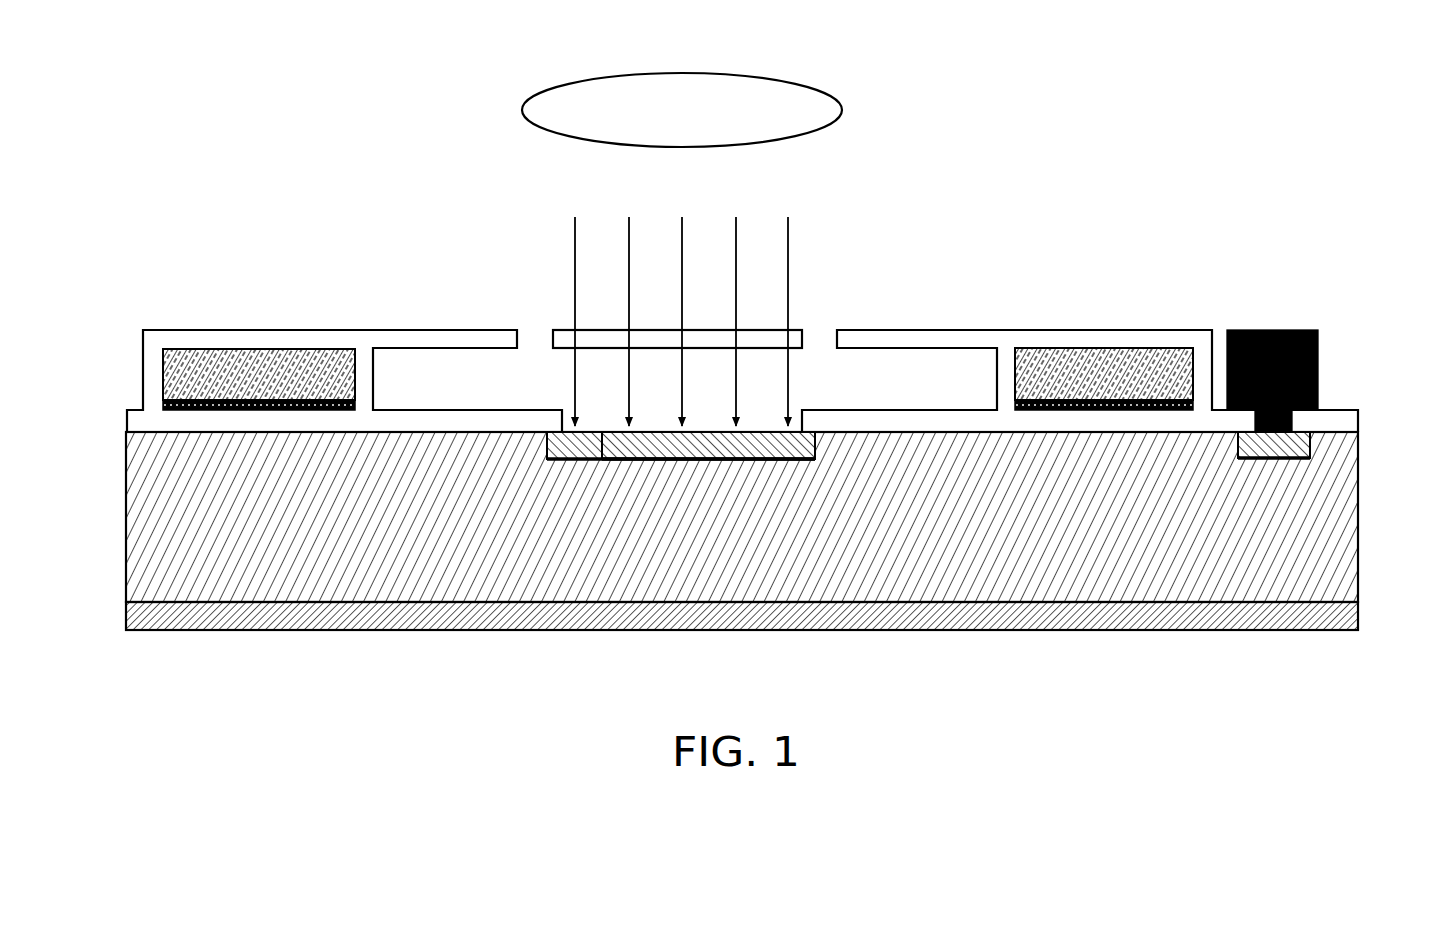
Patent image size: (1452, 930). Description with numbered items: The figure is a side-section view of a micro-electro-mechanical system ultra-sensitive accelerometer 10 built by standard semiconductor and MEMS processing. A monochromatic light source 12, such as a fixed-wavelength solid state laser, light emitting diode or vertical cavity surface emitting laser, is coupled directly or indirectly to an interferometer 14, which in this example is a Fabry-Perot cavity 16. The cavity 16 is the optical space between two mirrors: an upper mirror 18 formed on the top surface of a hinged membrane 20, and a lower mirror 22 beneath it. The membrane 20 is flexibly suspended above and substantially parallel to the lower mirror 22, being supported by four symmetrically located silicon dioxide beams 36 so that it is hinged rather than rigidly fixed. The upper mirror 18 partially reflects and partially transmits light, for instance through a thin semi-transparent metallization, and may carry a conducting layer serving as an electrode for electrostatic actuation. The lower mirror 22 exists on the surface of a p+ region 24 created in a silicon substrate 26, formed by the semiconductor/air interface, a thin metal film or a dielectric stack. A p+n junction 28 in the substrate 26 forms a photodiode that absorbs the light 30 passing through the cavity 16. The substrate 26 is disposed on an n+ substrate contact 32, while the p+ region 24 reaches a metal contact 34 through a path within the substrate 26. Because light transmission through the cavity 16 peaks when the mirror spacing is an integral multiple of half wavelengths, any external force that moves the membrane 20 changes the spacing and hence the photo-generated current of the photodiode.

The micro-electro-mechanical system ultra-sensitive accelerometer 10 is at (974, 126).
The monochromatic light source 12 is at (767, 78).
The interferometer 14 is at (560, 377).
The Fabry-Perot cavity 16 is at (725, 384).
The upper mirror 18 is at (600, 348).
The hinged membrane 20 is at (793, 330).
The lower mirror 22 is at (761, 430).
The p+ region 24 is at (603, 460).
The substrate 26 is at (1358, 527).
The p+n junction 28 is at (700, 460).
The light 30 is at (788, 237).
The n+ substrate contact 32 is at (1195, 622).
The metal contact 34 is at (1271, 330).
The silicon dioxide beams 36 is at (1106, 336).